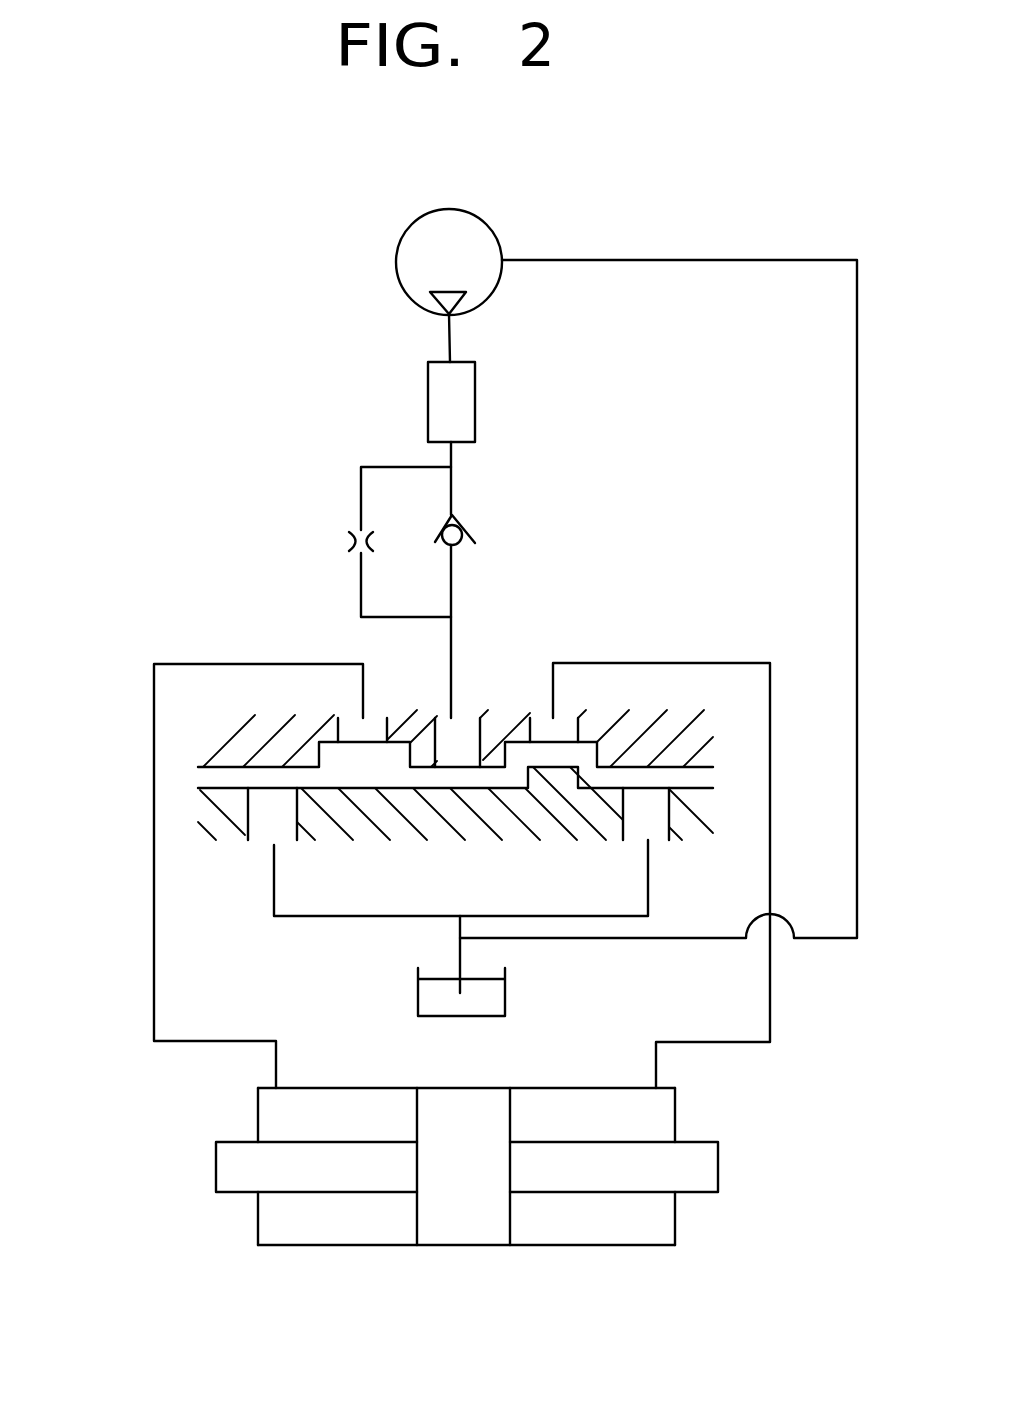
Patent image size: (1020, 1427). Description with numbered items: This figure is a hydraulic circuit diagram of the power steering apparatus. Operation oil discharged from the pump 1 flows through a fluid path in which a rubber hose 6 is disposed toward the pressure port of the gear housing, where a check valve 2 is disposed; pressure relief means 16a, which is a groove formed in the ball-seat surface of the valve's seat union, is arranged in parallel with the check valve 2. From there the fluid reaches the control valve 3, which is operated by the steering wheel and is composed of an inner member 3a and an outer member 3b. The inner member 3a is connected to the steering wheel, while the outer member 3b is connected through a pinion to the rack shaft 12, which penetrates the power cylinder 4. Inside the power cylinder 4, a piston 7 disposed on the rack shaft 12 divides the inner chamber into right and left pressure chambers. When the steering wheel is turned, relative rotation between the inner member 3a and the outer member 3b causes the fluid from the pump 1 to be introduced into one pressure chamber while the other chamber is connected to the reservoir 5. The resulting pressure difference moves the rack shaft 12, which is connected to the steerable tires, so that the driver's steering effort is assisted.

The pump 1 is at (471, 235).
The check valve 2 is at (473, 515).
The control valve 3 is at (228, 688).
The inner member 3a is at (222, 826).
The outer member 3b is at (225, 735).
The power cylinder 4 is at (232, 1240).
The reservoir 5 is at (437, 990).
The rubber hose 6 is at (448, 388).
The piston 7 is at (458, 1107).
The rack shaft 12 is at (700, 1157).
The pressure relief means 16a is at (332, 510).